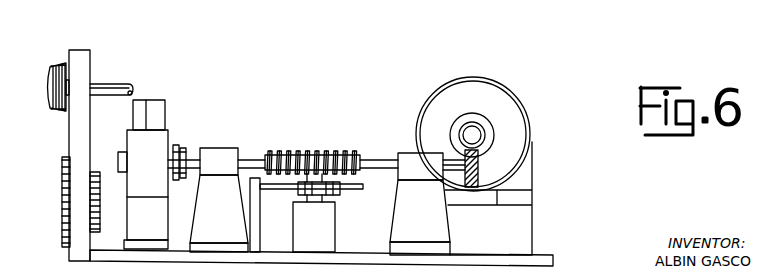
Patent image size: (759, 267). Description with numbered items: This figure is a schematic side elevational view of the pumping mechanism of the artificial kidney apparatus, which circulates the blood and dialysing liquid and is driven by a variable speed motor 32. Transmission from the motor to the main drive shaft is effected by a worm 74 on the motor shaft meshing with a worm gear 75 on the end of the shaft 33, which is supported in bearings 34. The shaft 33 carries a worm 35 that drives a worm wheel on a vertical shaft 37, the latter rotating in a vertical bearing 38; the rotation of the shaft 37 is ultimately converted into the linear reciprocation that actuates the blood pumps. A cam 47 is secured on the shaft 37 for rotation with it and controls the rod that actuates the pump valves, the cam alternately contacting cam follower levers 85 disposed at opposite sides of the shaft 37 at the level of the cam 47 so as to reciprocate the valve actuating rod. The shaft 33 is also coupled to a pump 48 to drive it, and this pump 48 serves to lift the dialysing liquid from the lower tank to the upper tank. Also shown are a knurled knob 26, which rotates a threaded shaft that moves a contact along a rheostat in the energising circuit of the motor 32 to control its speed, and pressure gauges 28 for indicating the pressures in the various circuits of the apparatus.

The knurled knob 26 is at (62, 64).
The pressure gauges 28 is at (64, 191).
The pump 48 is at (152, 137).
The bearings 34 is at (226, 150).
The shaft 33 is at (253, 159).
The worm 35 is at (330, 131).
The shaft 37 is at (303, 195).
The cam 47 is at (338, 200).
The cam follower levers 85 is at (363, 188).
The vertical bearing 38 is at (332, 241).
The variable speed motor 32 is at (492, 96).
The worm 74 is at (487, 130).
The worm gear 75 is at (479, 171).